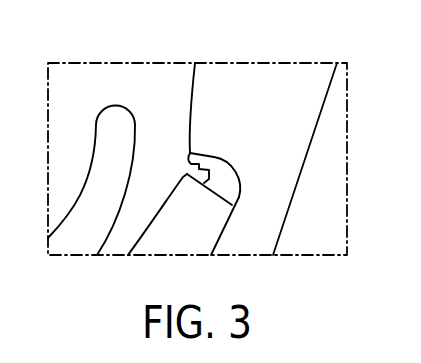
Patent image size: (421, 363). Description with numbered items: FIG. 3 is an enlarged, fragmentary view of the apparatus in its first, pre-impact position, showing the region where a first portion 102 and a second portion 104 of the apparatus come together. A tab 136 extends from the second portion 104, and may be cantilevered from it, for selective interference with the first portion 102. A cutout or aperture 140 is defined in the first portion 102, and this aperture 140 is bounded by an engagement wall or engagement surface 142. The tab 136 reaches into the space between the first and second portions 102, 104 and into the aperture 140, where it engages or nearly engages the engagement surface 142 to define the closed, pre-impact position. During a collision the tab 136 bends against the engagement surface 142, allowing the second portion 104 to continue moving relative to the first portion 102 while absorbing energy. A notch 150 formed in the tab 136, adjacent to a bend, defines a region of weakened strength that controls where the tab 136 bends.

The first portion 102 is at (298, 75).
The second portion 104 is at (75, 229).
The tab 136 is at (232, 205).
The aperture 140 is at (205, 221).
The engagement surface 142 is at (224, 162).
The notch 150 is at (205, 157).